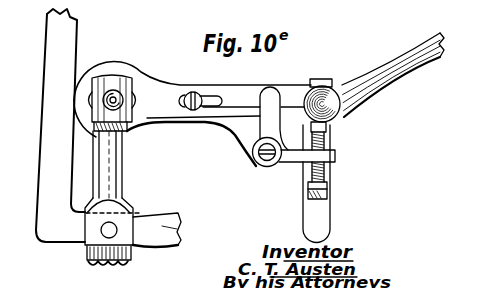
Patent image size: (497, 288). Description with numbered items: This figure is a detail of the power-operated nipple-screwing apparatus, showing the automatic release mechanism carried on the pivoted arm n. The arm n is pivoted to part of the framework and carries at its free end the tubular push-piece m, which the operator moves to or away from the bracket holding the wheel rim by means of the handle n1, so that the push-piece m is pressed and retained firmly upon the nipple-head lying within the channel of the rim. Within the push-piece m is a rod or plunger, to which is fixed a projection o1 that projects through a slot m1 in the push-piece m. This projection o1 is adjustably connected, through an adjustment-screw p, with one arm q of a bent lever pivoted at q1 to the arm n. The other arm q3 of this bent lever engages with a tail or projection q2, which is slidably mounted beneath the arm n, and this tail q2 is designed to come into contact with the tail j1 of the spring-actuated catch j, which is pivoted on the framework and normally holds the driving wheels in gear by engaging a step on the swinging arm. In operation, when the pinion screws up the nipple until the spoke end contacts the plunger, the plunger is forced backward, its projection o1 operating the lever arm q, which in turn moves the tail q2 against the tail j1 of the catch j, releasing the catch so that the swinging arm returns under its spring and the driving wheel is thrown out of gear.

The tail of the catch j1 is at (65, 42).
The catch j is at (180, 233).
The tail or projection q2 is at (152, 103).
The arm n is at (245, 123).
The other arm of the bent lever q3 is at (267, 88).
The pivot of the bent lever q1 is at (262, 161).
The arm of the bent lever q is at (336, 157).
The adjustment-screw p is at (330, 127).
The handle n1 is at (388, 70).
The tubular push-piece m is at (319, 228).
The slot in the push-piece m1 is at (333, 180).
The projection o1 is at (308, 196).